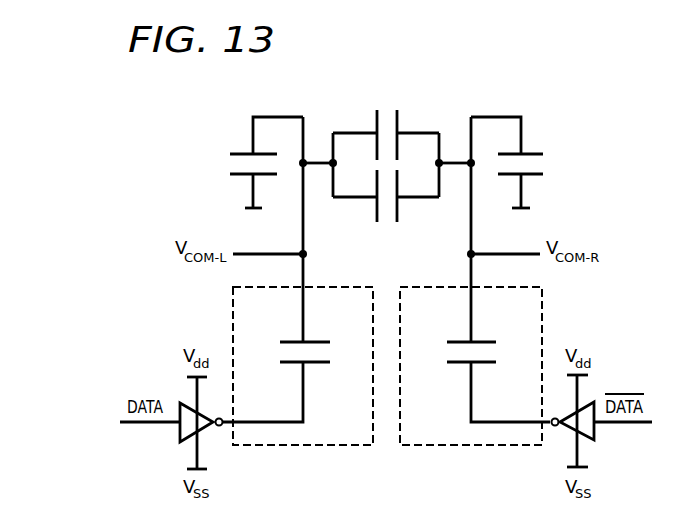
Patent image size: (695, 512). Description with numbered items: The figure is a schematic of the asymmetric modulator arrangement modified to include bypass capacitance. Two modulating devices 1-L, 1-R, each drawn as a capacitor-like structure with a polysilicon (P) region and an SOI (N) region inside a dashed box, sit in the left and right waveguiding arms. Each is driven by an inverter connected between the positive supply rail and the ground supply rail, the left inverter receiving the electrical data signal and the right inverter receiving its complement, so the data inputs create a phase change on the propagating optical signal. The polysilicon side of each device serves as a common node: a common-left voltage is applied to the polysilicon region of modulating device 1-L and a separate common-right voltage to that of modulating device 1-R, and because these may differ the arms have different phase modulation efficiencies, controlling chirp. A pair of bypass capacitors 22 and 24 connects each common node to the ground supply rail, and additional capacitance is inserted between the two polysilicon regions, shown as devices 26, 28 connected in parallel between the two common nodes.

The bypass capacitor 22 is at (225, 165).
The bypass capacitor 24 is at (546, 167).
The capacitance device 26 is at (387, 108).
The capacitance device 28 is at (391, 222).
The modulating device 1-L is at (332, 446).
The modulating device 1-R is at (440, 446).